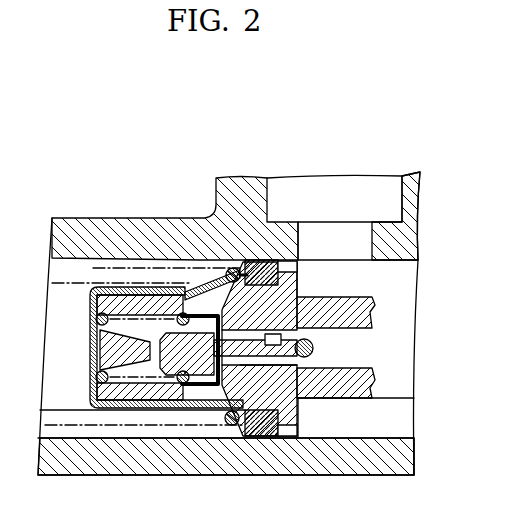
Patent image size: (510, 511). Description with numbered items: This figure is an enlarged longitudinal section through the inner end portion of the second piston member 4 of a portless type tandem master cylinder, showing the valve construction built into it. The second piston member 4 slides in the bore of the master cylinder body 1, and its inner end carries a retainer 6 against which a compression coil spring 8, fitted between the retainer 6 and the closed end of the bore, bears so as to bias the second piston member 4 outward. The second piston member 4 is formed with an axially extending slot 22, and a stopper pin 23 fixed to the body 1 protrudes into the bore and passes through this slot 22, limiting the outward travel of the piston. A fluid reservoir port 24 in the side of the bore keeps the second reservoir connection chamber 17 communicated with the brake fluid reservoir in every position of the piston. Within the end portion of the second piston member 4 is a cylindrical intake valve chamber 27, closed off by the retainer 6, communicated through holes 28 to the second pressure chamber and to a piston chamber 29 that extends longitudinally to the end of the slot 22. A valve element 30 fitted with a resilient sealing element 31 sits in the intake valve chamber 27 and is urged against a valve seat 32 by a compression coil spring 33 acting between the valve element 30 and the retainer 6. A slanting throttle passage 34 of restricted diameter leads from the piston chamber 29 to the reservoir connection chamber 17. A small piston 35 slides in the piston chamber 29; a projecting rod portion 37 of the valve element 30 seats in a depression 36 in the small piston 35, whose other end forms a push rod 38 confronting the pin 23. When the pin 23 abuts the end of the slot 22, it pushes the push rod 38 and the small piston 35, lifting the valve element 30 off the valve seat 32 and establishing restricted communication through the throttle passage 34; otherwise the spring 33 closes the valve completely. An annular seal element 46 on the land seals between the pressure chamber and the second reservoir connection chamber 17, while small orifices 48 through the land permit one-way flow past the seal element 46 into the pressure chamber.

The master cylinder body 1 is at (398, 458).
The second piston member 4 is at (312, 305).
The retainer 6 is at (88, 381).
The compression coil spring 8 is at (155, 273).
The second reservoir connection chamber 17 is at (360, 425).
The slot 22 is at (344, 318).
The stopper pin 23 is at (314, 349).
The fluid reservoir port 24 is at (357, 247).
The intake valve chamber 27 is at (148, 367).
The holes 28 is at (204, 297).
The piston chamber 29 is at (269, 337).
The valve element 30 is at (176, 383).
The resilient sealing element 31 is at (208, 365).
The valve seat 32 is at (216, 364).
The compression coil spring 33 is at (122, 313).
The slanting throttle passage 34 is at (253, 307).
The small piston 35 is at (302, 378).
The depression 36 is at (262, 366).
The projecting rod portion 37 is at (228, 268).
The push rod 38 is at (296, 368).
The annular seal element 46 is at (262, 432).
The small orifices 48 is at (285, 268).